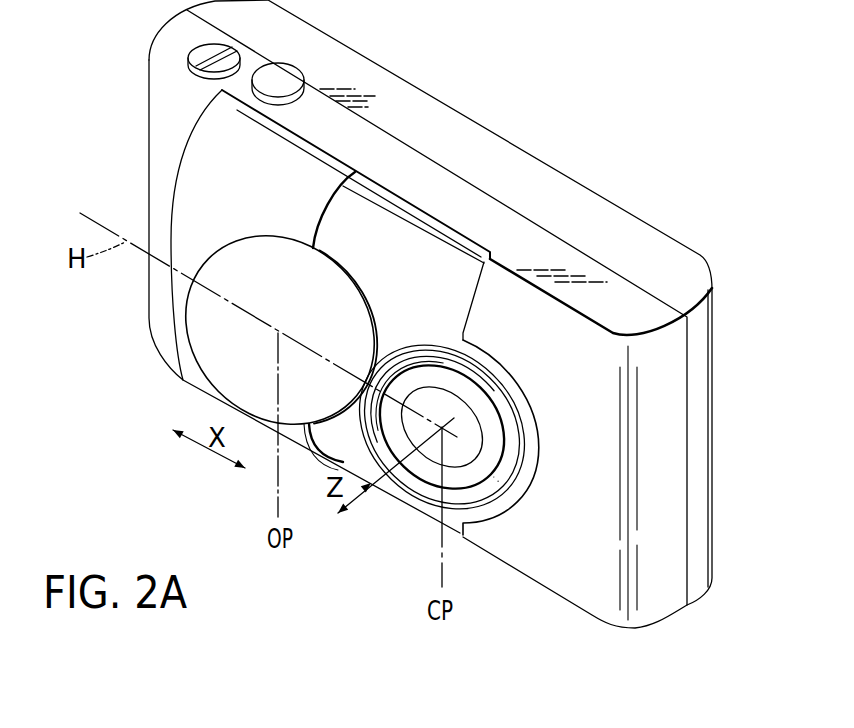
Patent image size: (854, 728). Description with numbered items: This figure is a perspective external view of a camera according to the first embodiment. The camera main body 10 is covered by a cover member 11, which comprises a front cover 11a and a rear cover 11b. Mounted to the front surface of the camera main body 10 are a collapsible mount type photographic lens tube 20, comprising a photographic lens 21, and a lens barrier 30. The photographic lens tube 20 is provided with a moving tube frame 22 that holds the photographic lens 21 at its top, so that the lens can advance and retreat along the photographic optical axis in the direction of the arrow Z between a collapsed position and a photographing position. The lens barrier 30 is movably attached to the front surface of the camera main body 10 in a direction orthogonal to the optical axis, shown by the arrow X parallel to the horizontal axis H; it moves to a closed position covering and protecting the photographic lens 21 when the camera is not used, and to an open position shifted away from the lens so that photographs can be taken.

The camera main body 10 is at (589, 162).
The cover member 11 is at (777, 678).
The front cover 11a is at (657, 616).
The rear cover 11b is at (699, 596).
The collapsible mount type photographic lens tube 20 is at (504, 478).
The photographic lens 21 is at (432, 452).
The moving tube frame 22 is at (363, 724).
The lens barrier 30 is at (212, 343).